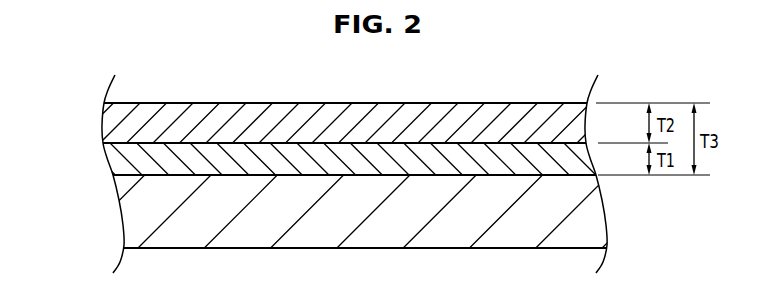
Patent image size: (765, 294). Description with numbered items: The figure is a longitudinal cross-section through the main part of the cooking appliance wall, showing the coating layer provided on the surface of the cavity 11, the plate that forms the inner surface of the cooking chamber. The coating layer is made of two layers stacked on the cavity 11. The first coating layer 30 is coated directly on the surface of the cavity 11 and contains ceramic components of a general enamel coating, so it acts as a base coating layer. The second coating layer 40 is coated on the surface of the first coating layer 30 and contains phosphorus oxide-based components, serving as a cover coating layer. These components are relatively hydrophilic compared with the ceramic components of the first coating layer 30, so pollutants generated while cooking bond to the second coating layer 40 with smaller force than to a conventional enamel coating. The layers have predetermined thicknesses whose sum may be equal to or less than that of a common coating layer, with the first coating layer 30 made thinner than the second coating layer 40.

The cavity 11 is at (125, 218).
The first coating layer 30 is at (113, 164).
The second coating layer 40 is at (104, 127).